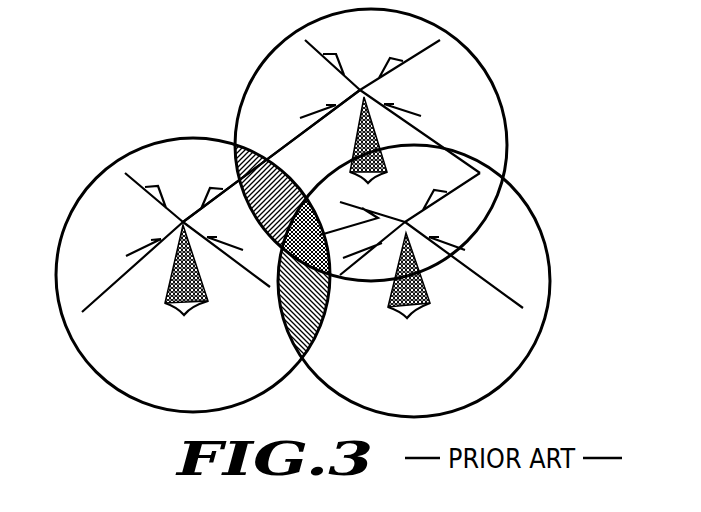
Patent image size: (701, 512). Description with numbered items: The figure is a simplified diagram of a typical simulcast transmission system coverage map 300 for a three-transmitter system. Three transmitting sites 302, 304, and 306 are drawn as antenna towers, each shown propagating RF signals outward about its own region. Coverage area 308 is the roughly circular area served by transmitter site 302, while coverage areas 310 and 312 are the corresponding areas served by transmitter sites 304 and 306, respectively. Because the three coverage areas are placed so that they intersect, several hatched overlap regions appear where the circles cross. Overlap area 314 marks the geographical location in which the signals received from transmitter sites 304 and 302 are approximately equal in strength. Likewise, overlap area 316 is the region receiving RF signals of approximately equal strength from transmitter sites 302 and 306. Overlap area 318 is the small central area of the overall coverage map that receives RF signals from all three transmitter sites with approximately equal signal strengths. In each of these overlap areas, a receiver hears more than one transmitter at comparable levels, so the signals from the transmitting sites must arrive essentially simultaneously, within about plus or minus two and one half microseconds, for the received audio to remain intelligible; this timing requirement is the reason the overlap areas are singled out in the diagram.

The simulcast transmission system coverage map 300 is at (599, 98).
The transmitting site 302 is at (168, 288).
The transmitting site 304 is at (377, 127).
The transmitting site 306 is at (423, 282).
The coverage area 308 is at (152, 137).
The coverage area 310 is at (277, 48).
The coverage area 312 is at (505, 178).
The overlap area 314 is at (235, 145).
The overlap area 316 is at (303, 360).
The overlap area 318 is at (323, 187).